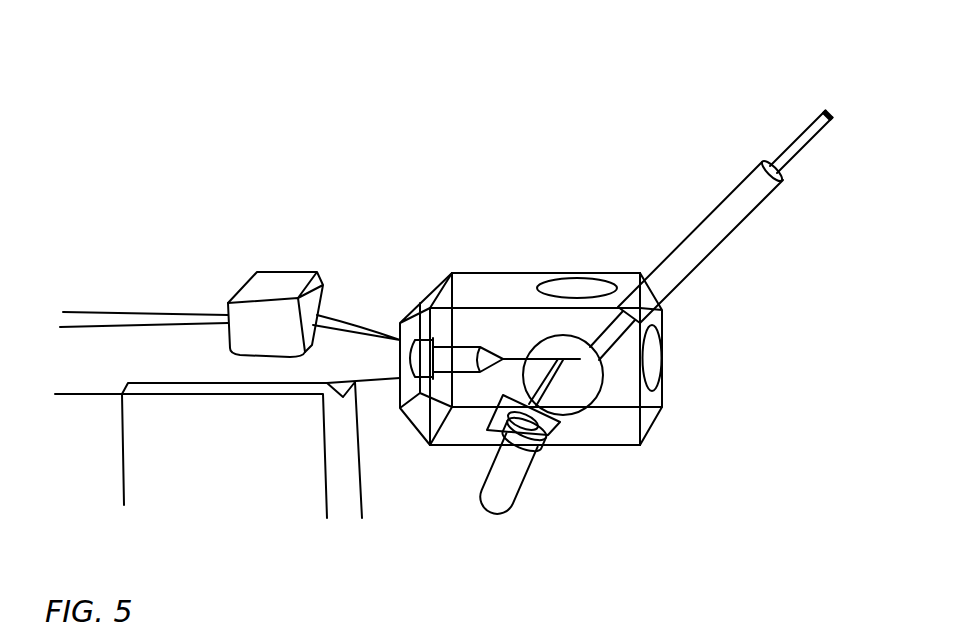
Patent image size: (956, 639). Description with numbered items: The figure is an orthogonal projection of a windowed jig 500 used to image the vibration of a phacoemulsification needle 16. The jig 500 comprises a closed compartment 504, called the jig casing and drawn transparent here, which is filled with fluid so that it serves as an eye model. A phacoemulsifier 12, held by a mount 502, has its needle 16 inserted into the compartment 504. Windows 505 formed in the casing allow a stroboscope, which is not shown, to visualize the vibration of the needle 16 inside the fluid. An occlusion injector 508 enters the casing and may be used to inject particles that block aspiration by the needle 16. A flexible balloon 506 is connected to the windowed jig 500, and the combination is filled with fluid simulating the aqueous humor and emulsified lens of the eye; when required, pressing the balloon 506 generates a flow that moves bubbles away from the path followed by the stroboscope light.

The windowed jig 500 is at (498, 127).
The phacoemulsifier 12 is at (137, 312).
The phacoemulsification needle 16 is at (503, 357).
The mount 502 is at (240, 448).
The closed compartment 504 is at (638, 272).
The windows 505 is at (607, 470).
The flexible balloon 506 is at (510, 513).
The occlusion injector 508 is at (715, 250).